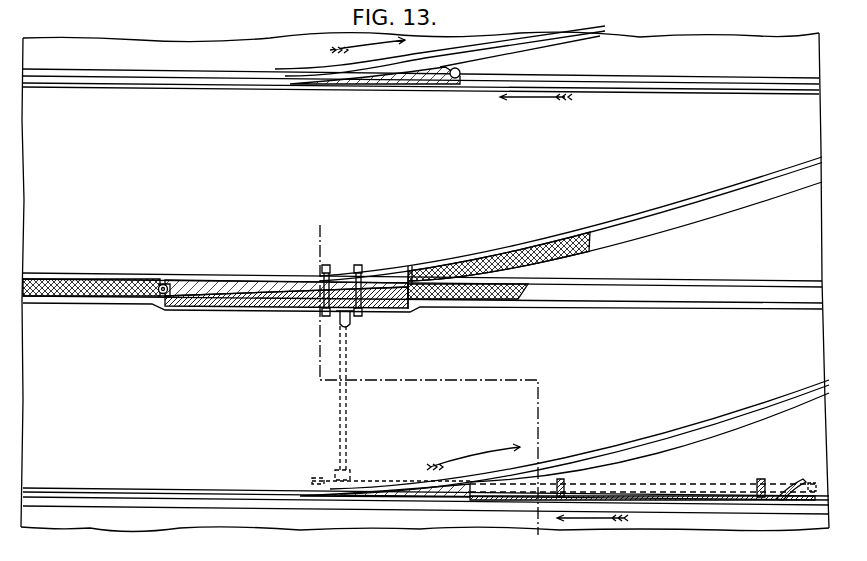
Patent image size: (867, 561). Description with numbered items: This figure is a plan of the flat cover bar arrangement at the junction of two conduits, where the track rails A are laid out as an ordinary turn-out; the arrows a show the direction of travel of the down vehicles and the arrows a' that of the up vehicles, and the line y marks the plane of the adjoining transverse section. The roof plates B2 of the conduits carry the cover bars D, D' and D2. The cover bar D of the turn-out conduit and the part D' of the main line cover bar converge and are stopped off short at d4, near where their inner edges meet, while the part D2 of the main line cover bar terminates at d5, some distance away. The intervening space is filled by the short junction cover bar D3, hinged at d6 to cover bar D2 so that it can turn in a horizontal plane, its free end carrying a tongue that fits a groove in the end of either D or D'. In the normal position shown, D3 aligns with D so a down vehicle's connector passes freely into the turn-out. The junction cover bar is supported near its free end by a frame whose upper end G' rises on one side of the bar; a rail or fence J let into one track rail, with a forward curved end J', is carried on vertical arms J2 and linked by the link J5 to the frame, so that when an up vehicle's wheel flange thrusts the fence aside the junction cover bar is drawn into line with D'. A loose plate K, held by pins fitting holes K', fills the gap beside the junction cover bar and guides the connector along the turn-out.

The track rail A is at (157, 82).
The arrow showing direction of down vehicles a is at (414, 253).
The arrow showing direction of up vehicles a' is at (564, 314).
The roof plate B2 is at (95, 272).
The turn-out cover bar D is at (499, 254).
The main line cover bar part D' is at (468, 309).
The main line cover bar part D2 is at (63, 292).
The junction cover bar D3 is at (250, 282).
The stopping point of cover bars d4 is at (403, 278).
The termination of cover bar D2 d5 is at (161, 274).
The hinge d6 is at (170, 287).
The upper end of frame G' is at (350, 294).
The rail or fence J is at (642, 519).
The forward curved end of fence J' is at (796, 474).
The vertical arm J2 is at (561, 478).
The link J5 is at (347, 392).
The loose plate or flap K is at (286, 310).
The holes in plate K' is at (338, 329).
The section line y- y is at (427, 381).